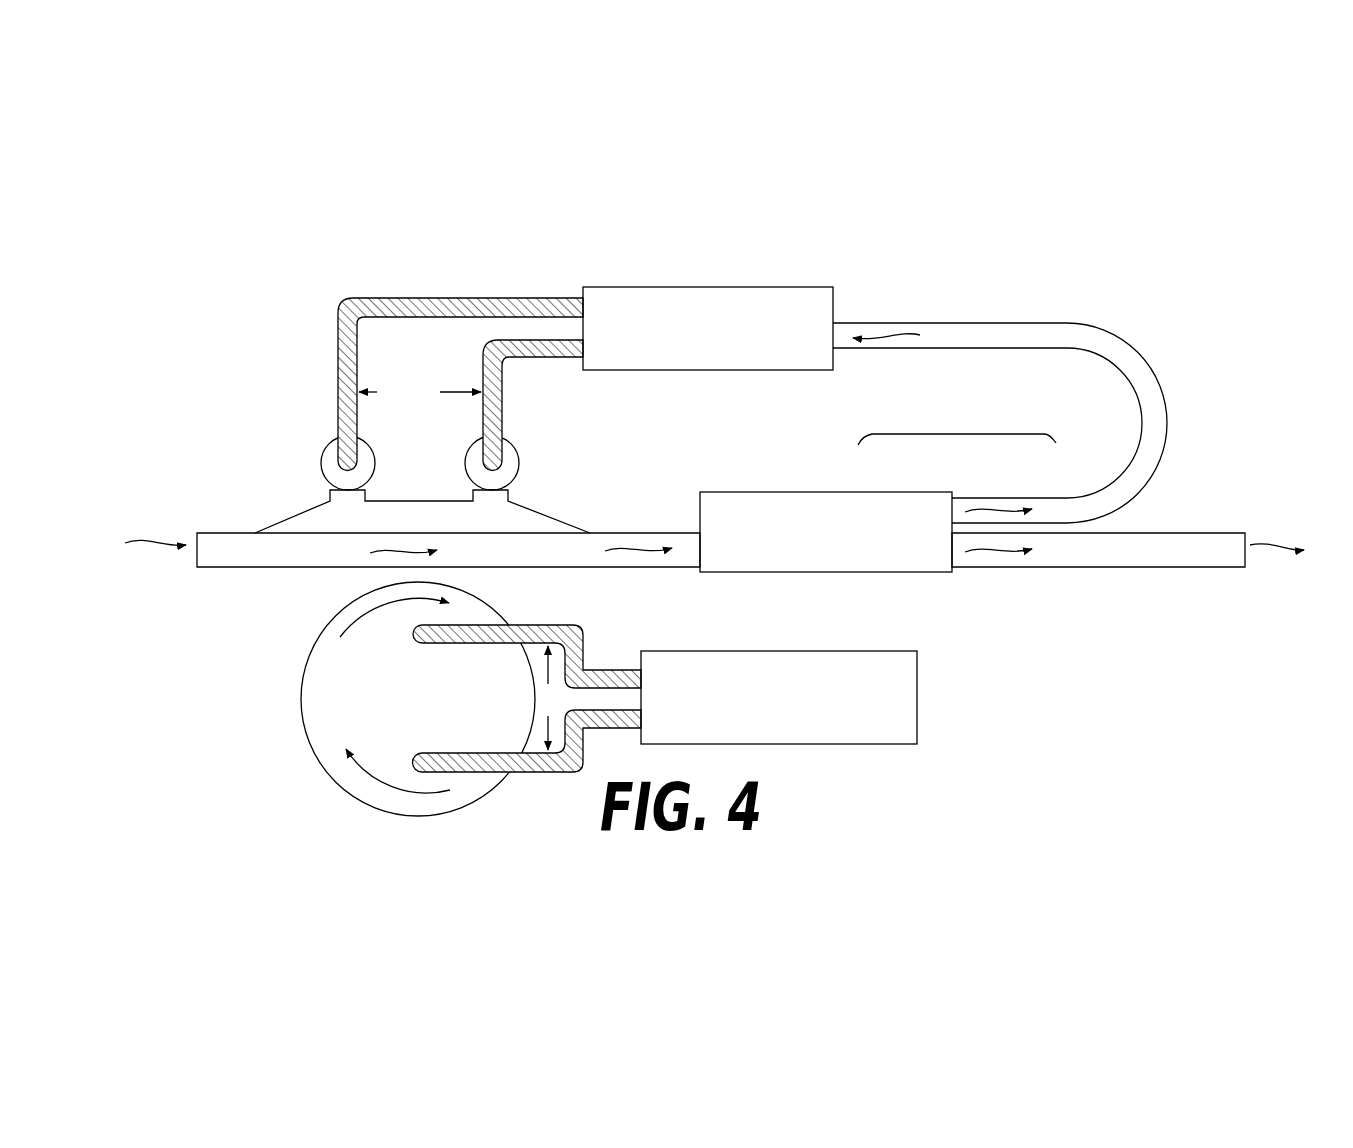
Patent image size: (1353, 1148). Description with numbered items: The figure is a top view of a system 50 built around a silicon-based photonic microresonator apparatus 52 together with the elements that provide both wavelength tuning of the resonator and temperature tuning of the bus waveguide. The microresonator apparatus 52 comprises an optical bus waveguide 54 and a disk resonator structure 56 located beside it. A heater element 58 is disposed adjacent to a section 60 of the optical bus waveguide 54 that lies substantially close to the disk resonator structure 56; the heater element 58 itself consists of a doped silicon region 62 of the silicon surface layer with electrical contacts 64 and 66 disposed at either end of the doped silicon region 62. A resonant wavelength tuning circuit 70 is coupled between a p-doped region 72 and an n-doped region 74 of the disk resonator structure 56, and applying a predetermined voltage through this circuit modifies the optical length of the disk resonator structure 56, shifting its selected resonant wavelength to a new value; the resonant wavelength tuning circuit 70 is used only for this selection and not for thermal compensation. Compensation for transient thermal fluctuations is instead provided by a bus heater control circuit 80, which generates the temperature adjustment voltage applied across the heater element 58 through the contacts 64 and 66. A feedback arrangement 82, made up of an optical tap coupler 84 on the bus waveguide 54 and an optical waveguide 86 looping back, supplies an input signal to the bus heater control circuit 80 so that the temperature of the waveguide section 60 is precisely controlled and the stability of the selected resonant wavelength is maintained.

The system 50 is at (344, 207).
The photonic microresonator apparatus 52 is at (271, 389).
The optical bus waveguide 54 is at (219, 551).
The disk resonator structure 56 is at (312, 727).
The heater element 58 is at (521, 402).
The section of optical bus waveguide 60 is at (508, 566).
The doped silicon region 62 is at (408, 505).
The electrical contact 64 is at (332, 468).
The electrical contact 66 is at (496, 452).
The resonant wavelength tuning circuit 70 is at (893, 660).
The p-doped region 72 is at (412, 640).
The n-doped region 74 is at (420, 757).
The bus heater control circuit 80 is at (815, 297).
The feedback arrangement 82 is at (922, 433).
The optical tap coupler 84 is at (858, 503).
The optical waveguide 86 is at (1120, 482).